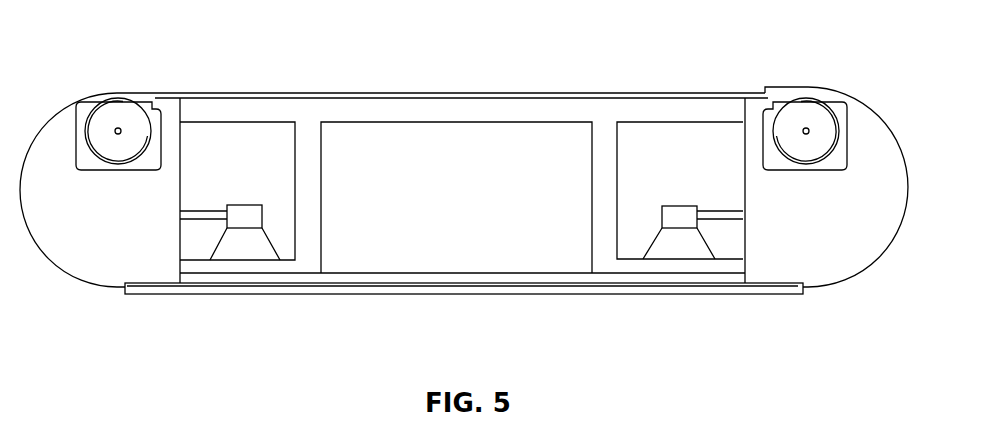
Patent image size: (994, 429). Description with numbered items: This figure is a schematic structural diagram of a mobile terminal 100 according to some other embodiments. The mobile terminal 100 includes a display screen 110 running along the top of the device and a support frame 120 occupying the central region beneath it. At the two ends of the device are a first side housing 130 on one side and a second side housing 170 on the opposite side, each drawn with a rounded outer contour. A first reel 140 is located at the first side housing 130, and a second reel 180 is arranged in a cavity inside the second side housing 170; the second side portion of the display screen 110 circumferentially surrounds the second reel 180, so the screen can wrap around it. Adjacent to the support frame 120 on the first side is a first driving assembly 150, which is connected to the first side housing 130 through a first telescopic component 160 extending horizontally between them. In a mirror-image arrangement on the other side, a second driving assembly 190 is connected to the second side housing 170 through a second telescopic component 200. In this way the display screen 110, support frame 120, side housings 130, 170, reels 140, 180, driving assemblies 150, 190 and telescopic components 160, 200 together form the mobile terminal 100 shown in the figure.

The mobile terminal 100 is at (397, 295).
The display screen 110 is at (567, 95).
The support frame 120 is at (397, 112).
The first side housing 130 is at (815, 257).
The first reel 140 is at (792, 110).
The first driving assembly 150 is at (670, 212).
The first telescopic component 160 is at (745, 202).
The second side housing 170 is at (72, 257).
The second reel 180 is at (113, 118).
The second driving assembly 190 is at (243, 212).
The second telescopic component 200 is at (180, 212).